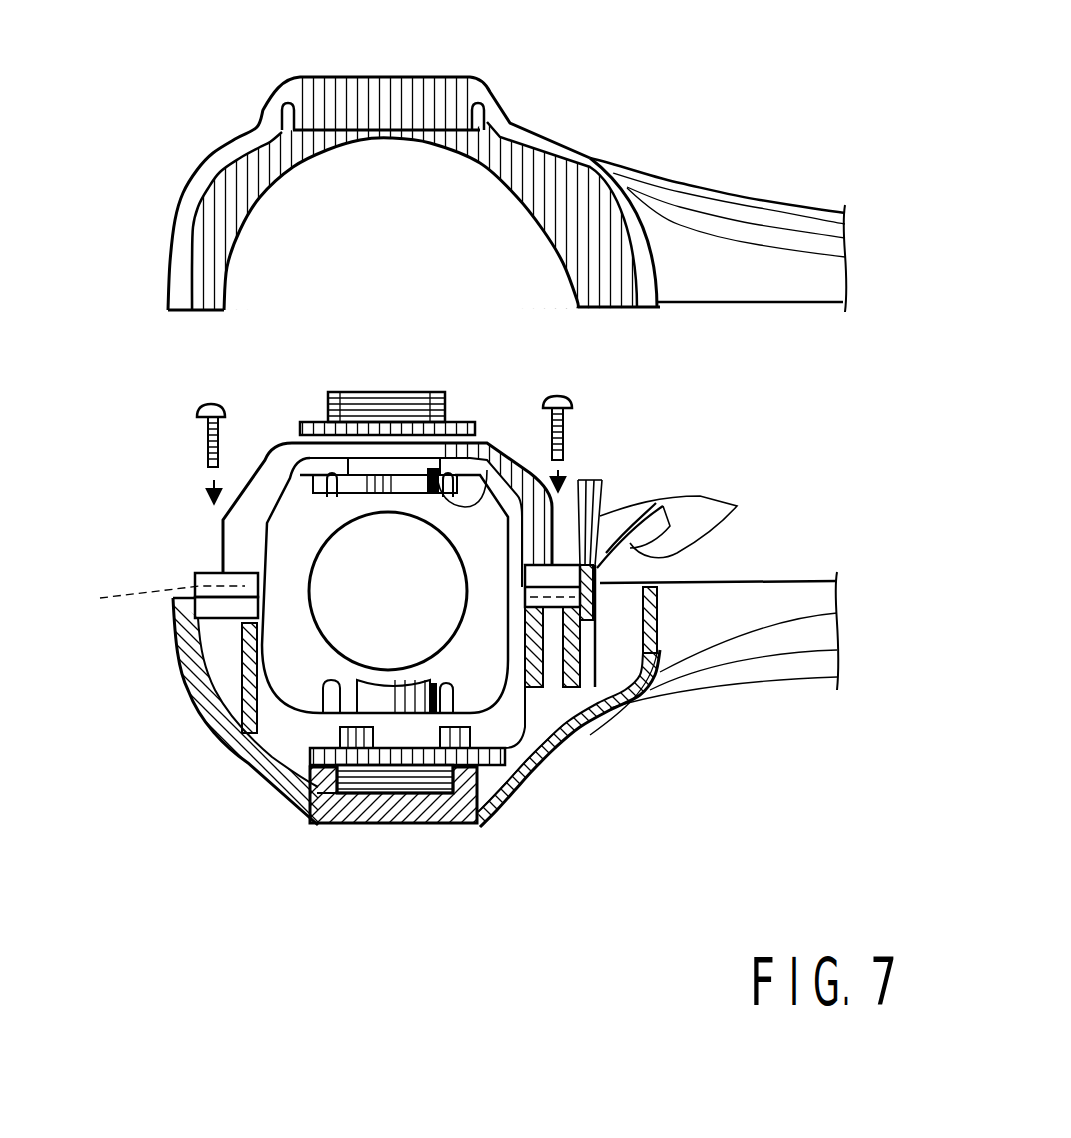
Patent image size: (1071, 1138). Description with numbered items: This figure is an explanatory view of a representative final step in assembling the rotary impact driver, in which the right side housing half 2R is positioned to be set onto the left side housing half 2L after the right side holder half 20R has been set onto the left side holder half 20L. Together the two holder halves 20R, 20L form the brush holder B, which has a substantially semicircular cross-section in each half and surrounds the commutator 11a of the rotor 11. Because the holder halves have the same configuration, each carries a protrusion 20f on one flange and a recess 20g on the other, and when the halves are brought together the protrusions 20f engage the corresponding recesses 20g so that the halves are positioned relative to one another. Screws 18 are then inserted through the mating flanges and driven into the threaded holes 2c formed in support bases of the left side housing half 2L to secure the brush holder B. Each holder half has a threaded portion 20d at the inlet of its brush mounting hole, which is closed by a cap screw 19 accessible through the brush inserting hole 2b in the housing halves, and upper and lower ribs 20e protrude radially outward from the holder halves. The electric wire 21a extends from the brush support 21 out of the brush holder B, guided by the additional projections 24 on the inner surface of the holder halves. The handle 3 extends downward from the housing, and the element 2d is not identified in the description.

The right side housing half 2R is at (548, 102).
The left side housing half 2L is at (260, 803).
The brush inserting hole 2b is at (310, 108).
The threaded hole 2c is at (223, 676).
The bottom portion of casing 2d is at (348, 825).
The handle 3 is at (707, 203).
The rotor 11 is at (522, 767).
The commutator 11a is at (527, 765).
The screw 18 is at (200, 412).
The cap screw 19 is at (427, 825).
The right side holder half 20R is at (525, 438).
The left side holder half 20L is at (283, 718).
The threaded portion 20d is at (433, 377).
The rib 20e is at (302, 737).
The protrusion 20f is at (763, 767).
The recess 20g is at (434, 703).
The brush support 21 is at (370, 483).
The electric wire 21a is at (490, 900).
The additional projections 24 is at (317, 487).
The brush holder B is at (207, 546).